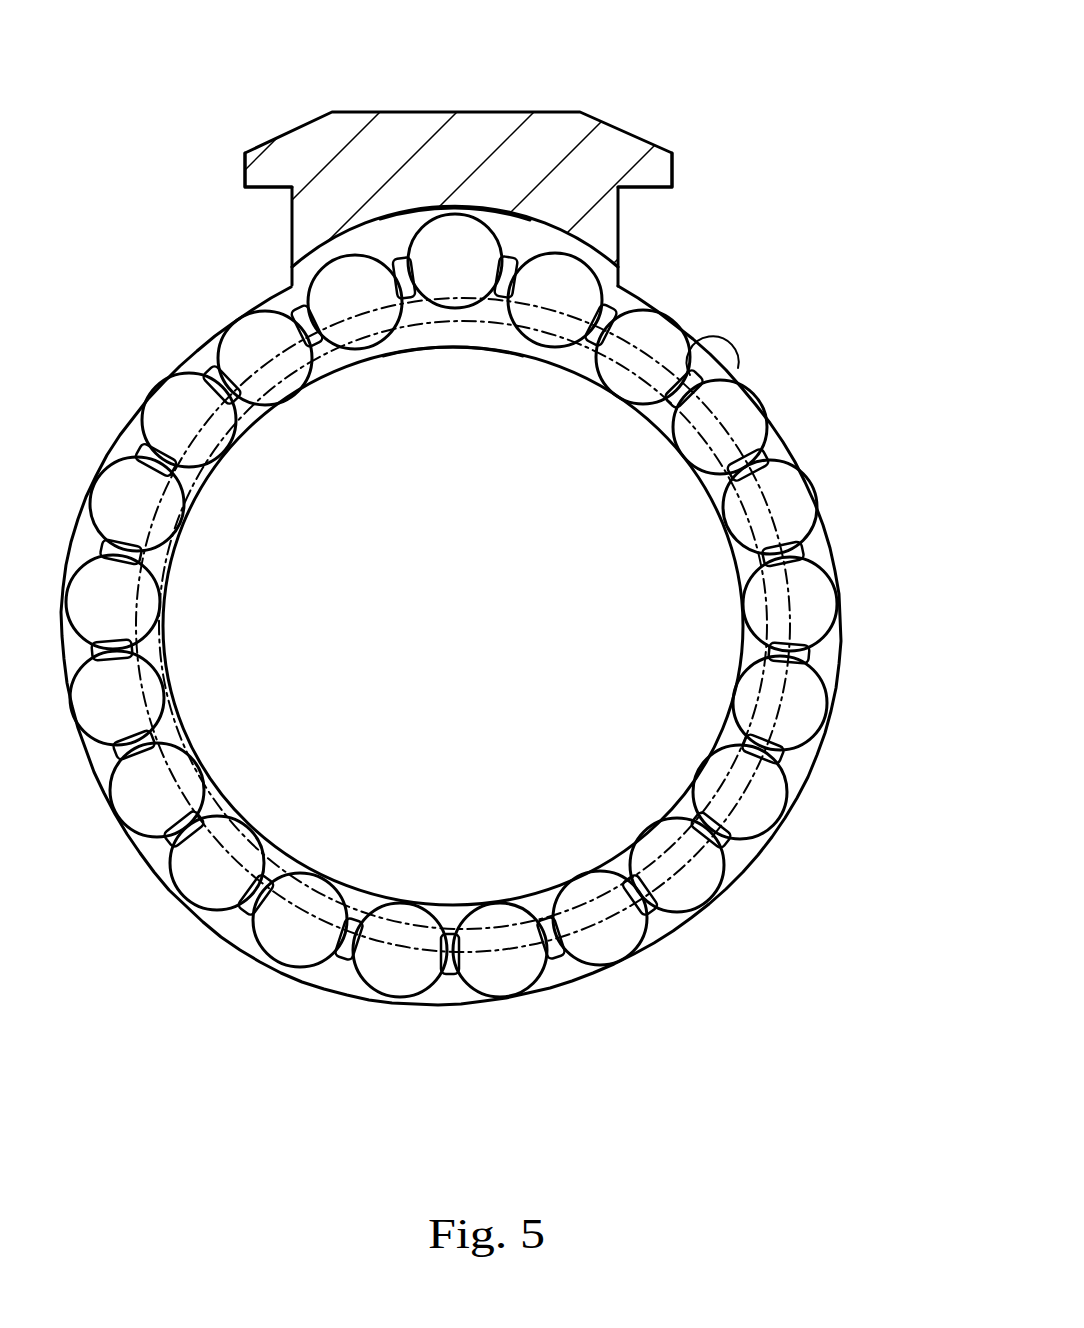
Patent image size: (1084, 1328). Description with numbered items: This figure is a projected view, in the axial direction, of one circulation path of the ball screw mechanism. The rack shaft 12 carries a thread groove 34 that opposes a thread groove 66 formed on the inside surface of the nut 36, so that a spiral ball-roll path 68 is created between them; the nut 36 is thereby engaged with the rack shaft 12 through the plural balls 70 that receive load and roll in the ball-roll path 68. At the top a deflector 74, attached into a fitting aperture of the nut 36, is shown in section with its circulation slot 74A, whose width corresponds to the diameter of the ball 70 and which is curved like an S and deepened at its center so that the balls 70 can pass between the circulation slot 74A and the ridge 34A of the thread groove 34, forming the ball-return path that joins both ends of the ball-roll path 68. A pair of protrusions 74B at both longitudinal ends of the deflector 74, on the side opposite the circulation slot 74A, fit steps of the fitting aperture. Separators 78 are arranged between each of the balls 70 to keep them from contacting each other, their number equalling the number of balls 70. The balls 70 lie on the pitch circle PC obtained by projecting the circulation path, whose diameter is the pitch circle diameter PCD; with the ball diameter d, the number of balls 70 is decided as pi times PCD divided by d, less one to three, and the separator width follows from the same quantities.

The rack shaft 12 is at (680, 522).
The thread groove 34 is at (565, 362).
The ridge 34A is at (407, 340).
The nut 36 is at (763, 387).
The thread groove 66 is at (712, 378).
The ball-roll path 68 is at (640, 476).
The ball 70 is at (443, 232).
The deflector 74 is at (557, 108).
The circulation slot 74A is at (524, 232).
The protrusion 74B is at (655, 163).
The separator 78 is at (400, 268).
The pitch circle PC is at (805, 528).
The pitch circle diameter PCD is at (112, 600).
The ball diameter d is at (176, 525).